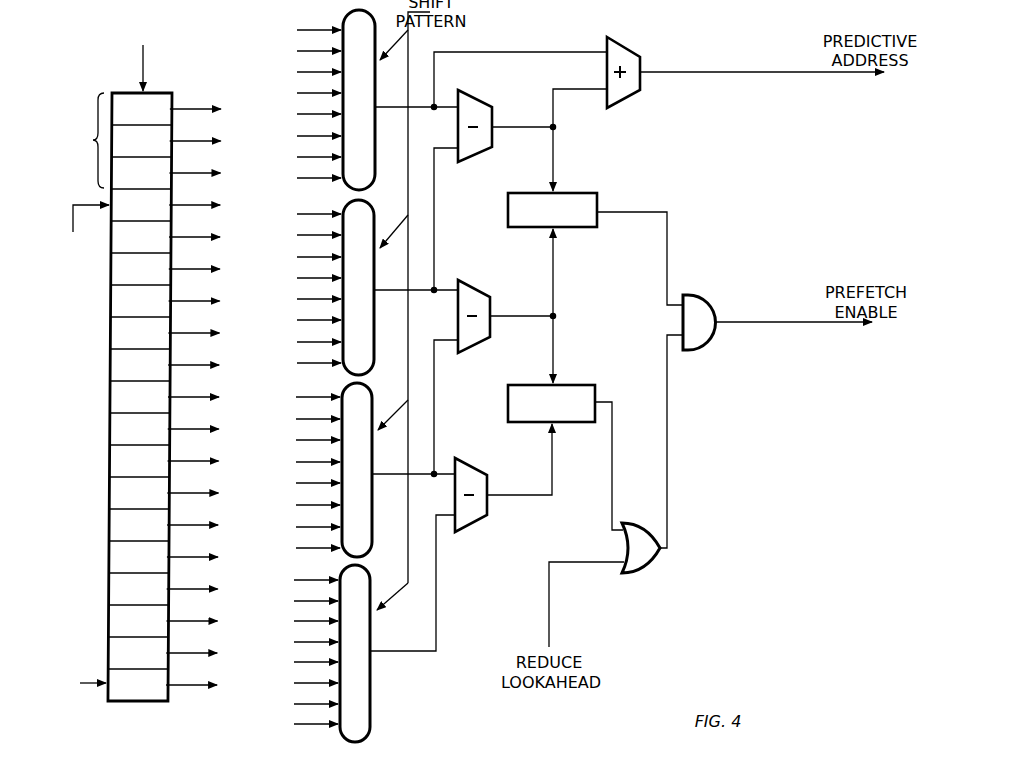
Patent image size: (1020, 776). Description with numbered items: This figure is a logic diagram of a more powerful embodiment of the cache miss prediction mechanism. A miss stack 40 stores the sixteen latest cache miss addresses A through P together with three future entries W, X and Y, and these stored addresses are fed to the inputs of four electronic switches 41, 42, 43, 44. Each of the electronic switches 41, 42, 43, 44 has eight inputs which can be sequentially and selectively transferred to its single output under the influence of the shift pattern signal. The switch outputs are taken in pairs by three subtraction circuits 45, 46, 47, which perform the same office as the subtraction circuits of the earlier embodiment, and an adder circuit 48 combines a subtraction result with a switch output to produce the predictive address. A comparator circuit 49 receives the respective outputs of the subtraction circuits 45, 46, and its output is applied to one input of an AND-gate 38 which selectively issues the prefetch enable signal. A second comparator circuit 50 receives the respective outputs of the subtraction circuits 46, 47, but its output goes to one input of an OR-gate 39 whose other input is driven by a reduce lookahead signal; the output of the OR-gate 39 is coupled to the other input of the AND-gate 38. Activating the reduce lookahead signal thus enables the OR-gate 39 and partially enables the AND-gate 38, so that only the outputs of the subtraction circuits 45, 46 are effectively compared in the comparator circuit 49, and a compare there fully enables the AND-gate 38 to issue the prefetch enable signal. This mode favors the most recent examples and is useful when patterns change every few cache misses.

The AND-gate 38 is at (703, 302).
The OR-gate 39 is at (643, 577).
The miss stack 40 is at (94, 426).
The electronic switch 41 is at (375, 162).
The electronic switch 42 is at (374, 345).
The electronic switch 43 is at (372, 530).
The electronic switch 44 is at (371, 722).
The subtraction circuit 45 is at (480, 103).
The subtraction circuit 46 is at (479, 292).
The subtraction circuit 47 is at (477, 470).
The adder circuit 48 is at (642, 62).
The comparator circuit 49 is at (594, 200).
The comparator circuit 50 is at (600, 396).